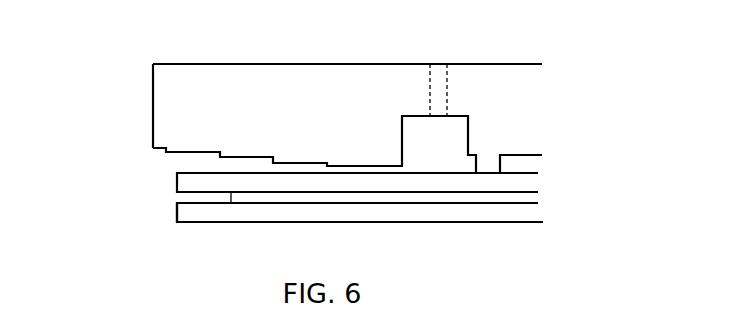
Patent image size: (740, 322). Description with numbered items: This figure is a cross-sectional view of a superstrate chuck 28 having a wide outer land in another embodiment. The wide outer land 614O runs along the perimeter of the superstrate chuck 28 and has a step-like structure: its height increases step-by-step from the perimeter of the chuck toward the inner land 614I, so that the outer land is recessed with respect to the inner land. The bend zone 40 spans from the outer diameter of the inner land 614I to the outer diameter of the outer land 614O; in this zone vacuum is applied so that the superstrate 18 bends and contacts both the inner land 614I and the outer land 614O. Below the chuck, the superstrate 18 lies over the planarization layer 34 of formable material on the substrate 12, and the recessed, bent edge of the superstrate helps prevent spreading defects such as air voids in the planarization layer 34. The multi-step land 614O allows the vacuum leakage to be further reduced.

The bend zone 40 is at (475, 90).
The superstrate chuck 28 is at (193, 110).
The wide outer land 614O is at (167, 153).
The inner land 614I is at (490, 165).
The superstrate 18 is at (528, 183).
The planarization layer 34 is at (528, 197).
The substrate 12 is at (180, 213).